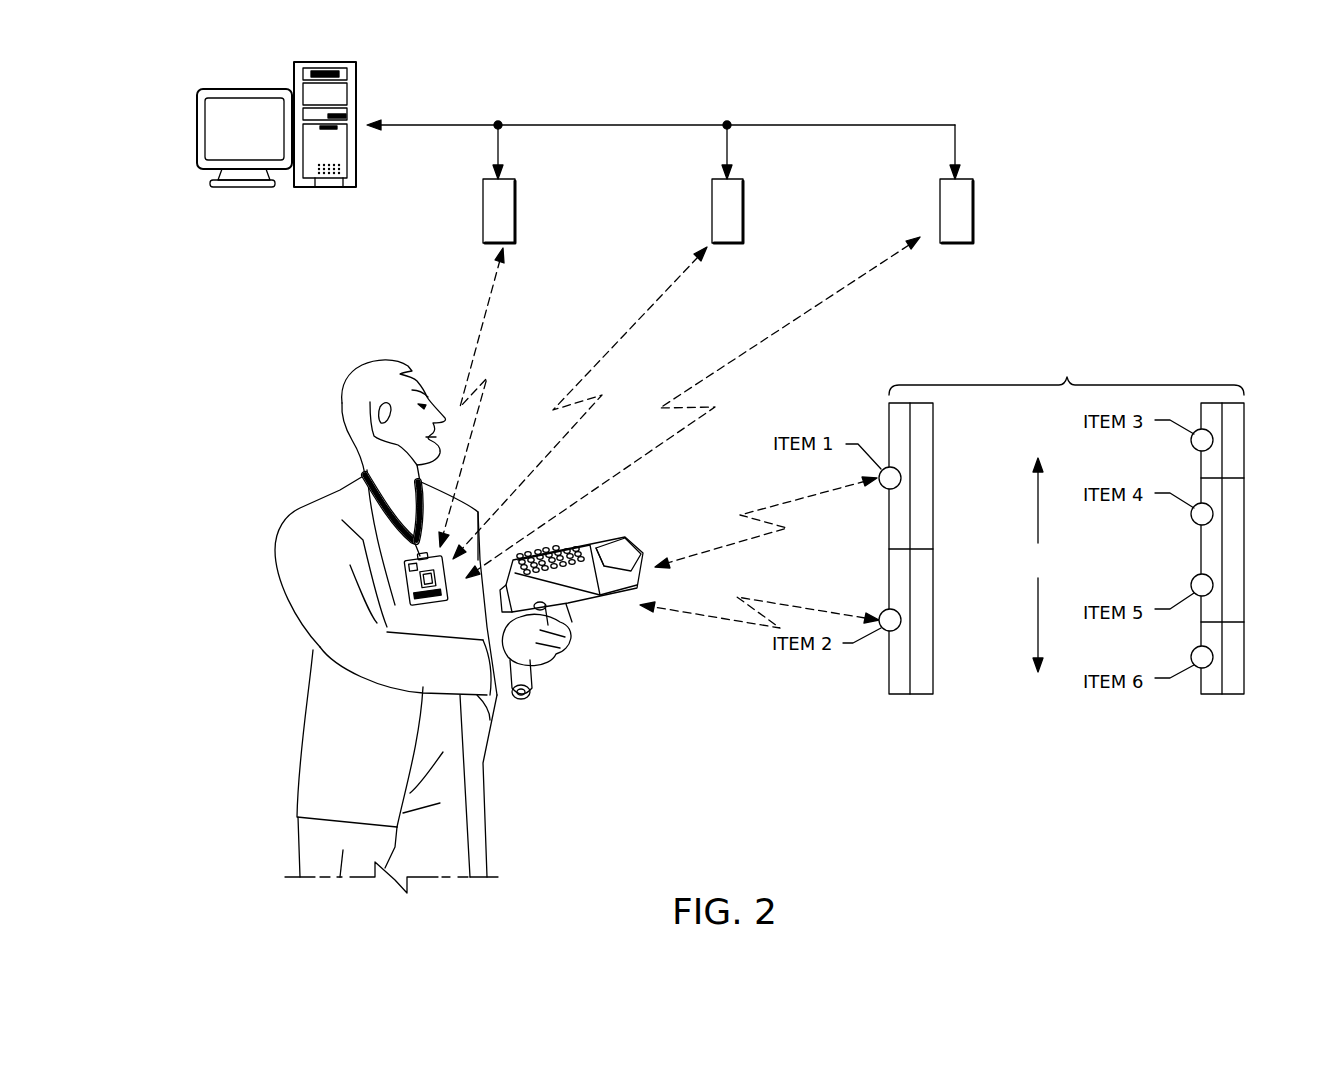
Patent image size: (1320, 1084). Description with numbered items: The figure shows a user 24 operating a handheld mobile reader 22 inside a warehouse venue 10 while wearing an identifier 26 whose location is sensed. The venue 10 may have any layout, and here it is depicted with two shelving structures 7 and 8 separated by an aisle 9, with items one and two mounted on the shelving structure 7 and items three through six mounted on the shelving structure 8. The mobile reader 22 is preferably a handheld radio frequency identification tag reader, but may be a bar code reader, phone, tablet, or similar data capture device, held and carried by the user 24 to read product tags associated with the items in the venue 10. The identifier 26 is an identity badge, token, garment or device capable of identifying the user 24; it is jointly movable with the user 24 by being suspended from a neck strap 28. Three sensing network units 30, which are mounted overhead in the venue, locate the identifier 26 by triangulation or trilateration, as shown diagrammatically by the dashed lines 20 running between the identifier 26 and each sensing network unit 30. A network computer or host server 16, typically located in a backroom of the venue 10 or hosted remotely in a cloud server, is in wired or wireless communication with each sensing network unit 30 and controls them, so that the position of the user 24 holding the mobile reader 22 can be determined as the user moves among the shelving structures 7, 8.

The host server 16 is at (197, 128).
The sensing network unit 30 is at (483, 212).
The dashed lines 20 is at (480, 326).
The user 24 is at (259, 577).
The neck strap 28 is at (365, 478).
The identifier 26 is at (407, 583).
The mobile reader 22 is at (606, 617).
The venue 10 is at (1136, 372).
The shelving structure 7 is at (921, 403).
The shelving structure 8 is at (1213, 403).
The aisle 9 is at (1092, 577).